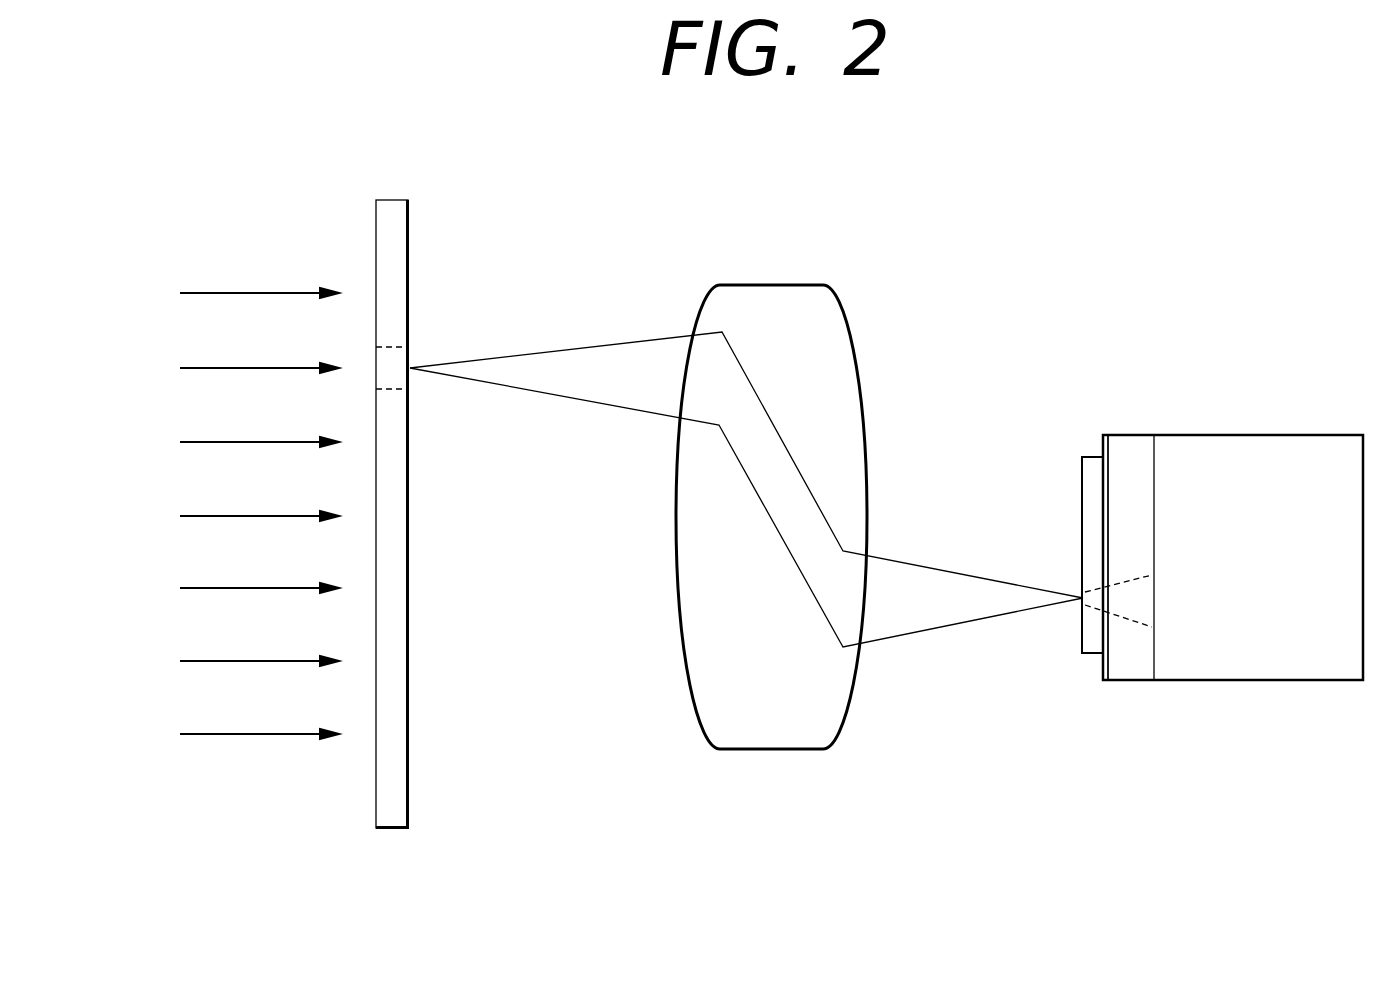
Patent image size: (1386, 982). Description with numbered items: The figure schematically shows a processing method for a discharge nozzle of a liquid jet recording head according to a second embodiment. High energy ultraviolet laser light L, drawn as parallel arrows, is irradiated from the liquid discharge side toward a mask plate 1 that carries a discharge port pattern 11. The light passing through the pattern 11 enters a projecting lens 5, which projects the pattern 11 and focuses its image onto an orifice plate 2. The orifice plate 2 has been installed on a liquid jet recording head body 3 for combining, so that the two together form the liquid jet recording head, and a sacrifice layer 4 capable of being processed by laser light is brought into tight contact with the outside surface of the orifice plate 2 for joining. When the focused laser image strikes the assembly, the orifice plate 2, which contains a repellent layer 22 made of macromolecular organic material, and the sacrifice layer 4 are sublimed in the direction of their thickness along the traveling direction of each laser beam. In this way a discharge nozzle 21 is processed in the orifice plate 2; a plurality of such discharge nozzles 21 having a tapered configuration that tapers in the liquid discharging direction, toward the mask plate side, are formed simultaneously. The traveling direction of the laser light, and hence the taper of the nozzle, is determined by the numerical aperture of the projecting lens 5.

The ultraviolet laser light L is at (252, 293).
The mask plate 1 is at (395, 764).
The discharge port pattern 11 is at (386, 359).
The projecting lens 5 is at (709, 670).
The orifice plate 2 is at (1128, 445).
The discharge nozzle 21 is at (1135, 607).
The repellent layer 22 is at (1100, 447).
The liquid jet recording head body 3 is at (1280, 662).
The sacrifice layer 4 is at (1088, 627).